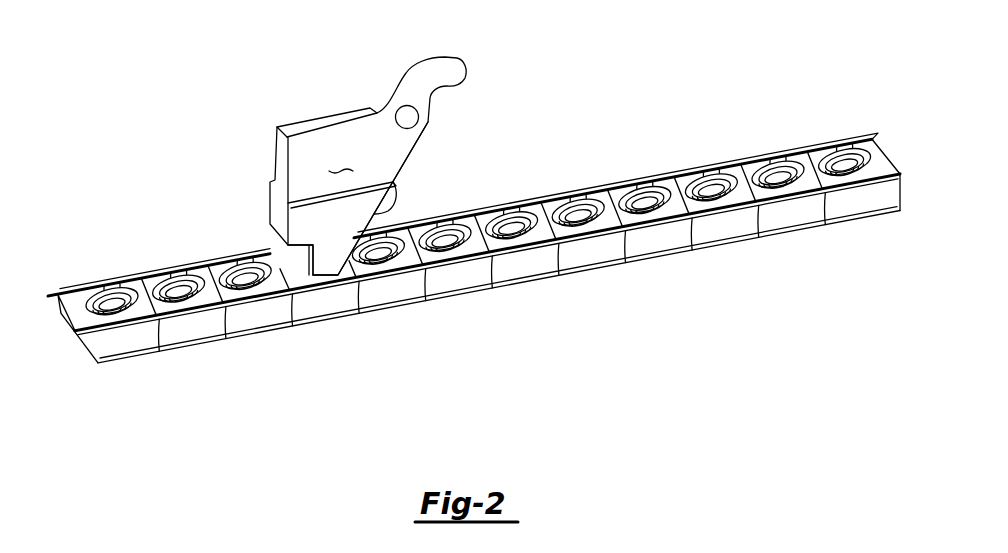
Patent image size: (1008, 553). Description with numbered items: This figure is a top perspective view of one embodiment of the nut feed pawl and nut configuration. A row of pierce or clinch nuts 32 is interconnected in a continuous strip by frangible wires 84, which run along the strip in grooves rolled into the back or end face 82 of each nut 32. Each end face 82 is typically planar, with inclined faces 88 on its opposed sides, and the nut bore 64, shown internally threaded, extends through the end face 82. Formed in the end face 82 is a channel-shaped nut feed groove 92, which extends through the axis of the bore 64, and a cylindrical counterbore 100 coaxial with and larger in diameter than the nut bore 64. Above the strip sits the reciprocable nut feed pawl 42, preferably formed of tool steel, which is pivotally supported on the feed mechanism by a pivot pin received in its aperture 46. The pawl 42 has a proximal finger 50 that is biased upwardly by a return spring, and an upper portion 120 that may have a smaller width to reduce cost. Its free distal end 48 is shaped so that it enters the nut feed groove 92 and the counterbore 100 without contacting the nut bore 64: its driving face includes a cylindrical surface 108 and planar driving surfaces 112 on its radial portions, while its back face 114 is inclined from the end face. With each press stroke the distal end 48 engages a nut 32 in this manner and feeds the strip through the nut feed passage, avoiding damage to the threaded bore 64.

The pierce or clinch nut 32 is at (474, 225).
The nut feed pawl 42 is at (203, 176).
The aperture 46 is at (418, 114).
The free distal end 48 is at (330, 258).
The proximal finger 50 is at (450, 62).
The nut bore 64 is at (177, 300).
The end face 82 is at (728, 172).
The frangible wires 84 is at (787, 150).
The inclined faces 88 is at (651, 244).
The nut feed groove 92 is at (233, 255).
The counterbore 100 is at (77, 292).
The cylindrical surface 108 is at (282, 250).
The planar driving surfaces 112 is at (301, 292).
The back face 114 is at (397, 198).
The upper portion 120 is at (341, 161).